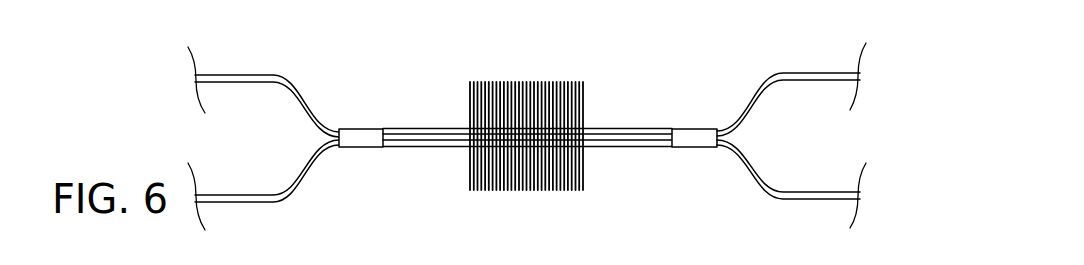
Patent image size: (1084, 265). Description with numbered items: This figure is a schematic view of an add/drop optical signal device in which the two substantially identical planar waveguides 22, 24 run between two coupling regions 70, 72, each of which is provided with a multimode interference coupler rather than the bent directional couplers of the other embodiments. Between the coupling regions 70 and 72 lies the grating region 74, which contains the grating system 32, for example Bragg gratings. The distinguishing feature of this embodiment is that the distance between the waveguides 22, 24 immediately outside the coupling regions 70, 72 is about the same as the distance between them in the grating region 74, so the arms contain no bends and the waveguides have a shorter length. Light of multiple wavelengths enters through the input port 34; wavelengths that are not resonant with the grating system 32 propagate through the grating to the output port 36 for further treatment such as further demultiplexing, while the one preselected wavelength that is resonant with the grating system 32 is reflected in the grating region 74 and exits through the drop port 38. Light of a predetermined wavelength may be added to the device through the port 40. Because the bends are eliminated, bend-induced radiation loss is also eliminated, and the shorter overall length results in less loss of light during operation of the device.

The planar waveguide 22 is at (303, 92).
The planar waveguide 24 is at (305, 180).
The grating system 32 is at (523, 73).
The input port 34 is at (200, 75).
The output port 36 is at (860, 192).
The drop port 38 is at (200, 195).
The port 40 is at (860, 73).
The coupling region 70 is at (375, 132).
The coupling region 72 is at (709, 124).
The grating region 74 is at (580, 70).